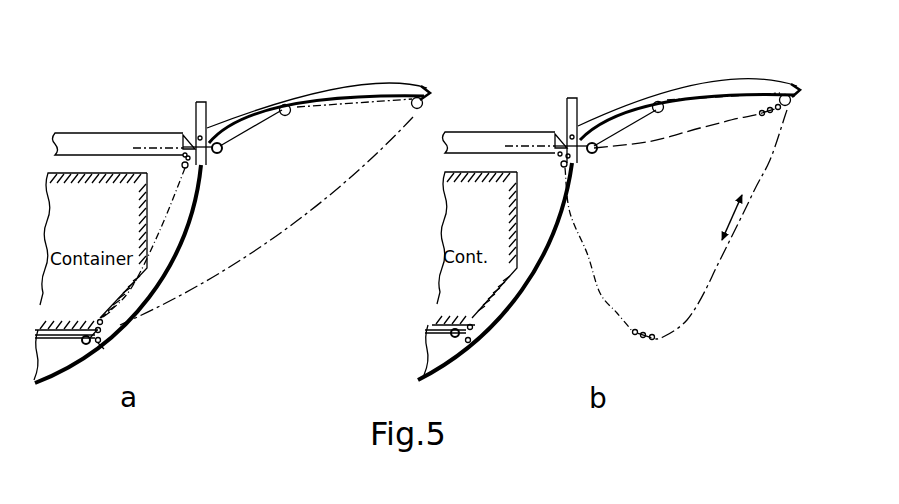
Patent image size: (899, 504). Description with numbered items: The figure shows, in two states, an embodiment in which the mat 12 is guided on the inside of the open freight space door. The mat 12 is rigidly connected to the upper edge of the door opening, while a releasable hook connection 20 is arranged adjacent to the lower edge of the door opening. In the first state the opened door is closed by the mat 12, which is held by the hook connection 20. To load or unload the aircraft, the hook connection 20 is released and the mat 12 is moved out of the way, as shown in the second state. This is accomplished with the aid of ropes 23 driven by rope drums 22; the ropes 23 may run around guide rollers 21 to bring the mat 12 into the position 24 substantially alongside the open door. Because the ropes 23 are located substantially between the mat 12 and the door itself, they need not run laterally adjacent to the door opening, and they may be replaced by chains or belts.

The mat 12 is at (175, 247).
The releasable hook connection 20 is at (105, 338).
The guide rollers 21 is at (412, 89).
The rope drums 22 is at (280, 98).
The ropes 23 is at (325, 203).
The position 24 is at (641, 150).